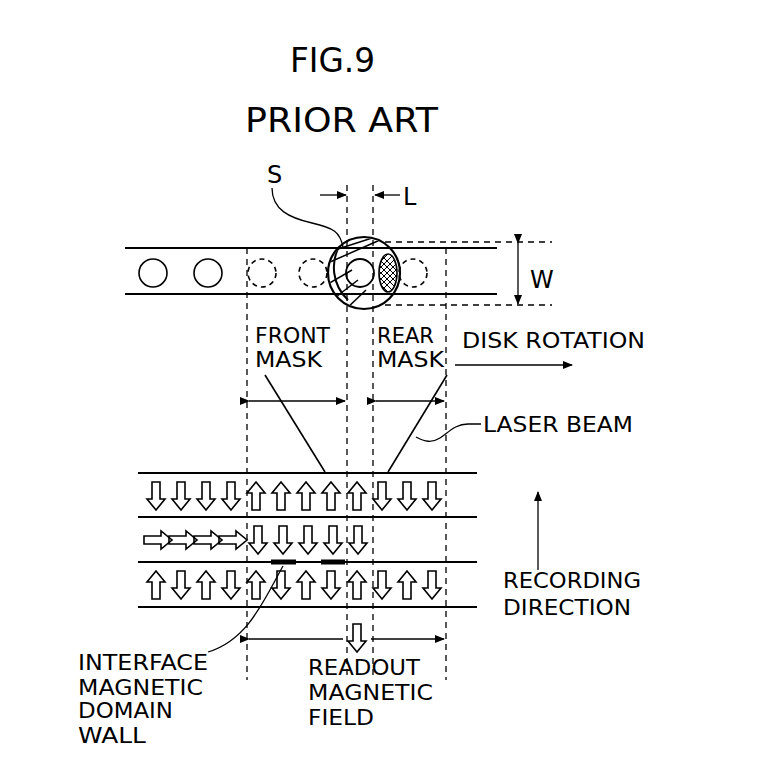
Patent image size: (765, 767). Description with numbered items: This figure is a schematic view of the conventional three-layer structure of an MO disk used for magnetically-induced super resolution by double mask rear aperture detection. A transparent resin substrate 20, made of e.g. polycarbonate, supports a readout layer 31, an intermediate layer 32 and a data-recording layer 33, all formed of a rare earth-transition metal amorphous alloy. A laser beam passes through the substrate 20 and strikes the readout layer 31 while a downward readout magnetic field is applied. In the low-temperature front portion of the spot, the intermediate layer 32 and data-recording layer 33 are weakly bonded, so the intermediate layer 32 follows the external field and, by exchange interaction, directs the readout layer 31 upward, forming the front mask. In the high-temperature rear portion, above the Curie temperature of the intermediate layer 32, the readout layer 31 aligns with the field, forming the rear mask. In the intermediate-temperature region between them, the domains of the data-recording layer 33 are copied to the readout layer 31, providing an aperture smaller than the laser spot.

The transparent resin substrate 20 is at (189, 469).
The readout layer 31 is at (140, 504).
The intermediate layer 32 is at (140, 552).
The data-recording layer 33 is at (140, 600).